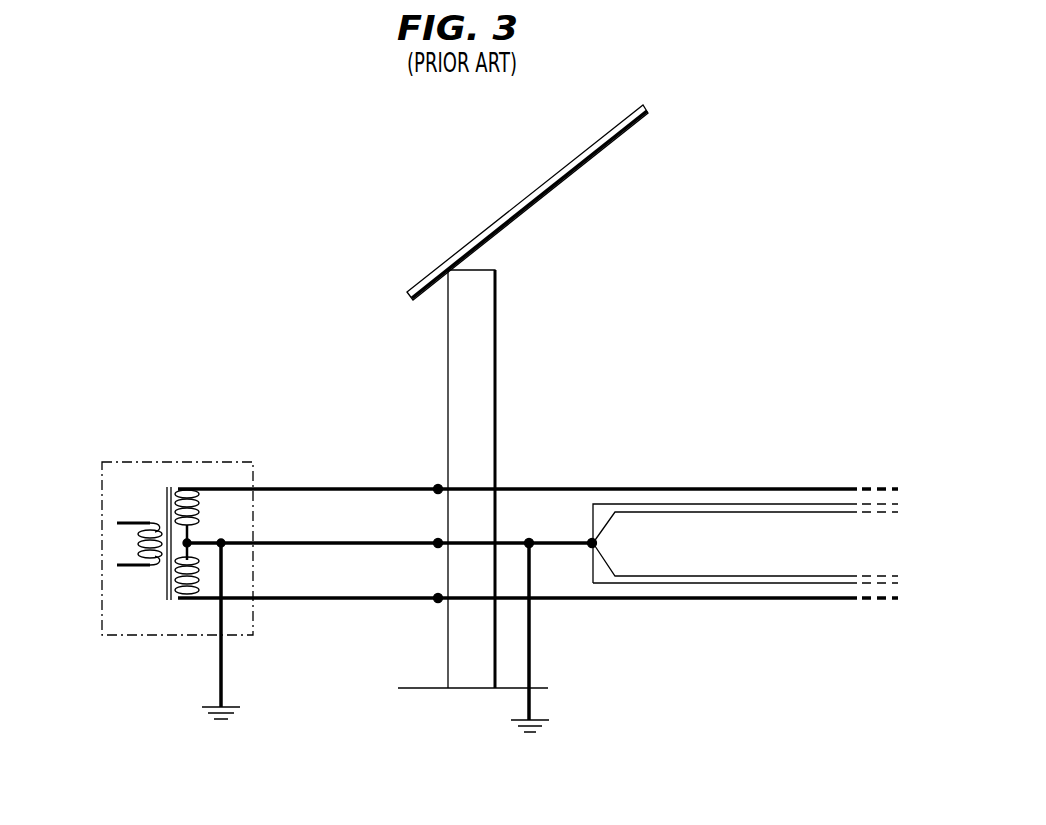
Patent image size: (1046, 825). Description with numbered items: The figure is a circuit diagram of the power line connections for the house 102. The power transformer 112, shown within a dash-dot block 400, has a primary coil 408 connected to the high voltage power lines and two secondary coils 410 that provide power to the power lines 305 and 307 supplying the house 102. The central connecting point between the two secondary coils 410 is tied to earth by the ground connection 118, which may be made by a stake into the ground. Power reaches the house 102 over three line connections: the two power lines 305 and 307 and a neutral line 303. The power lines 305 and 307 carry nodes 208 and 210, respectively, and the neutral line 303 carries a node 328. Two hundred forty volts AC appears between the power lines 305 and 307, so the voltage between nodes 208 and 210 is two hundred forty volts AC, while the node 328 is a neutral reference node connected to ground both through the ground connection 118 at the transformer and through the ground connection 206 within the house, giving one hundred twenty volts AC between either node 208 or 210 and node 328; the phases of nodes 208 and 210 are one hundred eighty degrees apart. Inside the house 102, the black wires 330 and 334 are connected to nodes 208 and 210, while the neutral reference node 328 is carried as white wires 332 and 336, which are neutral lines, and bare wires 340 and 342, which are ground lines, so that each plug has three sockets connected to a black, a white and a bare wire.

The house 102 is at (503, 192).
The power transformer 112 is at (173, 555).
The ground connection 118 is at (223, 565).
The ground connection 206 is at (531, 637).
The node 208 is at (438, 489).
The node 210 is at (438, 600).
The neutral line 303 is at (336, 545).
The power line 305 is at (325, 489).
The power line 307 is at (356, 600).
The node 328 is at (438, 543).
The power line 330 is at (715, 504).
The white wire 332 is at (789, 489).
The power line 334 is at (783, 600).
The white wire 336 is at (711, 583).
The bare wire 340 is at (661, 512).
The bare wire 342 is at (653, 577).
The transformer block 400 is at (140, 462).
The primary coil 408 is at (140, 545).
The secondary coils 410 is at (212, 500).